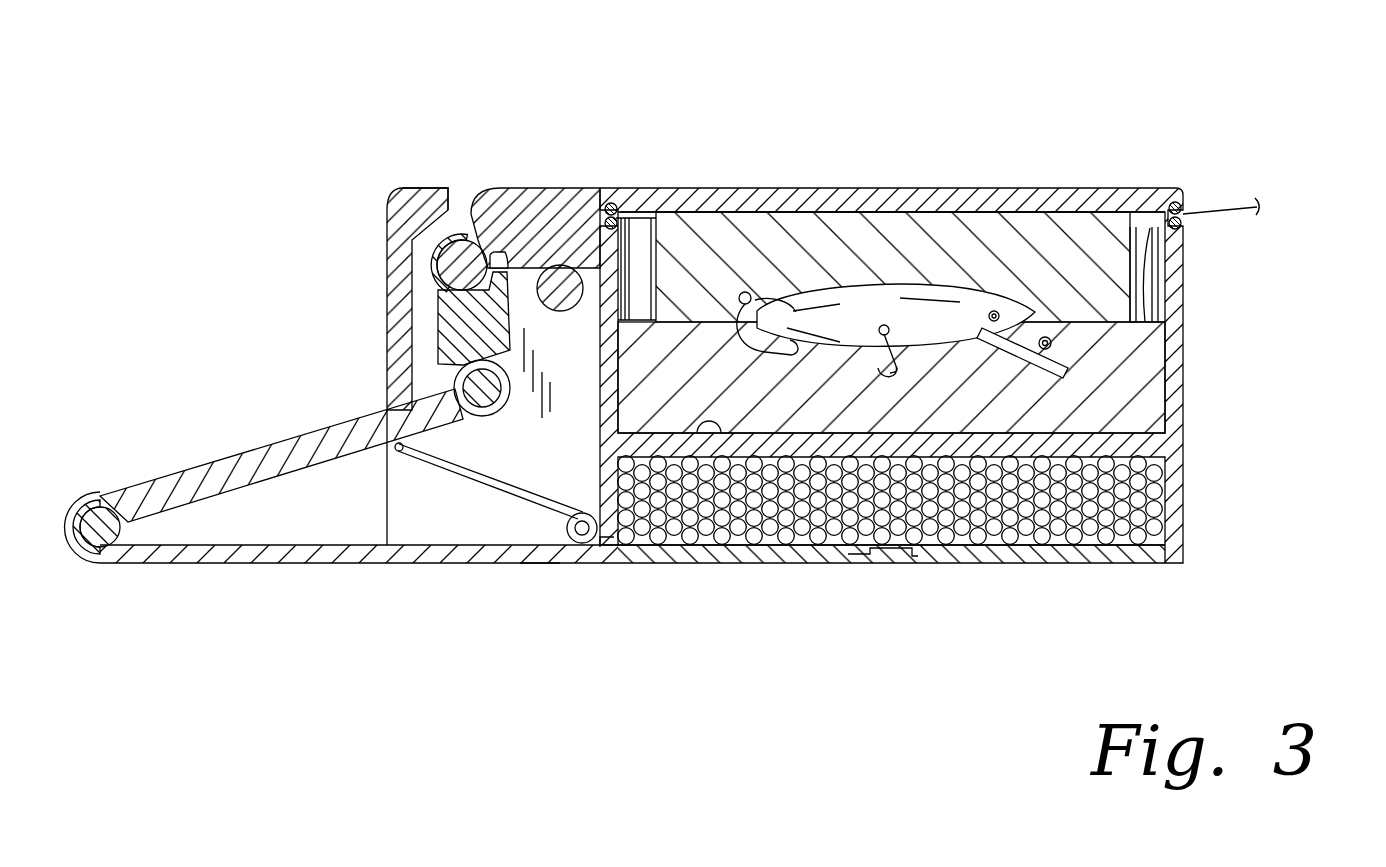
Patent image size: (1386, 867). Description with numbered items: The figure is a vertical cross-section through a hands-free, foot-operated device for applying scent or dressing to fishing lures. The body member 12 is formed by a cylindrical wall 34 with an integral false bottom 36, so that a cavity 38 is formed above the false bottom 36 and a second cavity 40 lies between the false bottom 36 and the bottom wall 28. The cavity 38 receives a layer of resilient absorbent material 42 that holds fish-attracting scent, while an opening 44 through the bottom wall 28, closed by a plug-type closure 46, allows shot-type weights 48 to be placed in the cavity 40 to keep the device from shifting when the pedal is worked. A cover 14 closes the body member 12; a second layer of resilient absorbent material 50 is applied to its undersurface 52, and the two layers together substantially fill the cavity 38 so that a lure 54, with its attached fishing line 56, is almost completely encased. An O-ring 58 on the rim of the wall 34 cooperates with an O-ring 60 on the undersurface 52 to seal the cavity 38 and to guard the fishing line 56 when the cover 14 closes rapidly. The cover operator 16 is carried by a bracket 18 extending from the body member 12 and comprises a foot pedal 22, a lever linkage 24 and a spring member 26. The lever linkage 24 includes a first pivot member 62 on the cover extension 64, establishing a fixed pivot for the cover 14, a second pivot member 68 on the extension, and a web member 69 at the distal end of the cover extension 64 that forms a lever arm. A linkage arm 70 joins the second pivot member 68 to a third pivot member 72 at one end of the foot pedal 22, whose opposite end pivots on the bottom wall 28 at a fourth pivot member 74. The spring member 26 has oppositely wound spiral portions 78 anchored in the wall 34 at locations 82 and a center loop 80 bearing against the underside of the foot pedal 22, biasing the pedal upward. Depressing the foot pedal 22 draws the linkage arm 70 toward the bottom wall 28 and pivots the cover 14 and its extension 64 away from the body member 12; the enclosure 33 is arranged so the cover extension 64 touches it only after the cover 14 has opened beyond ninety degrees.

The body member 12 is at (1186, 404).
The cover 14 is at (980, 207).
The cover operator 16 is at (276, 447).
The bracket 18 is at (595, 470).
The foot pedal 22 is at (242, 458).
The lever linkage 24 is at (425, 339).
The spring member 26 is at (442, 467).
The bottom wall 28 is at (193, 565).
The enclosure 33 is at (466, 243).
The cylindrical wall 34 is at (1178, 356).
The false bottom 36 is at (700, 434).
The cavity 38 is at (590, 378).
The cavity 40 is at (738, 546).
The resilient absorbent material 42 is at (1147, 422).
The opening 44 is at (858, 554).
The plug-type closure 46 is at (892, 560).
The shot-type weights 48 is at (1157, 490).
The resilient absorbent material 50 is at (1012, 212).
The undersurface 52 is at (770, 214).
The lure 54 is at (853, 298).
The fishing line 56 is at (1240, 213).
The O-ring 58 is at (1183, 228).
The O-ring 60 is at (1192, 196).
The first pivot member 62 is at (563, 266).
The cover extension 64 is at (528, 188).
The second pivot member 68 is at (403, 207).
The web member 69 is at (447, 205).
The linkage arm 70 is at (433, 288).
The third pivot member 72 is at (470, 385).
The fourth pivot member 74 is at (102, 530).
The spiral portions 78 is at (537, 565).
The center loop 80 is at (493, 482).
The locations 82 is at (598, 573).